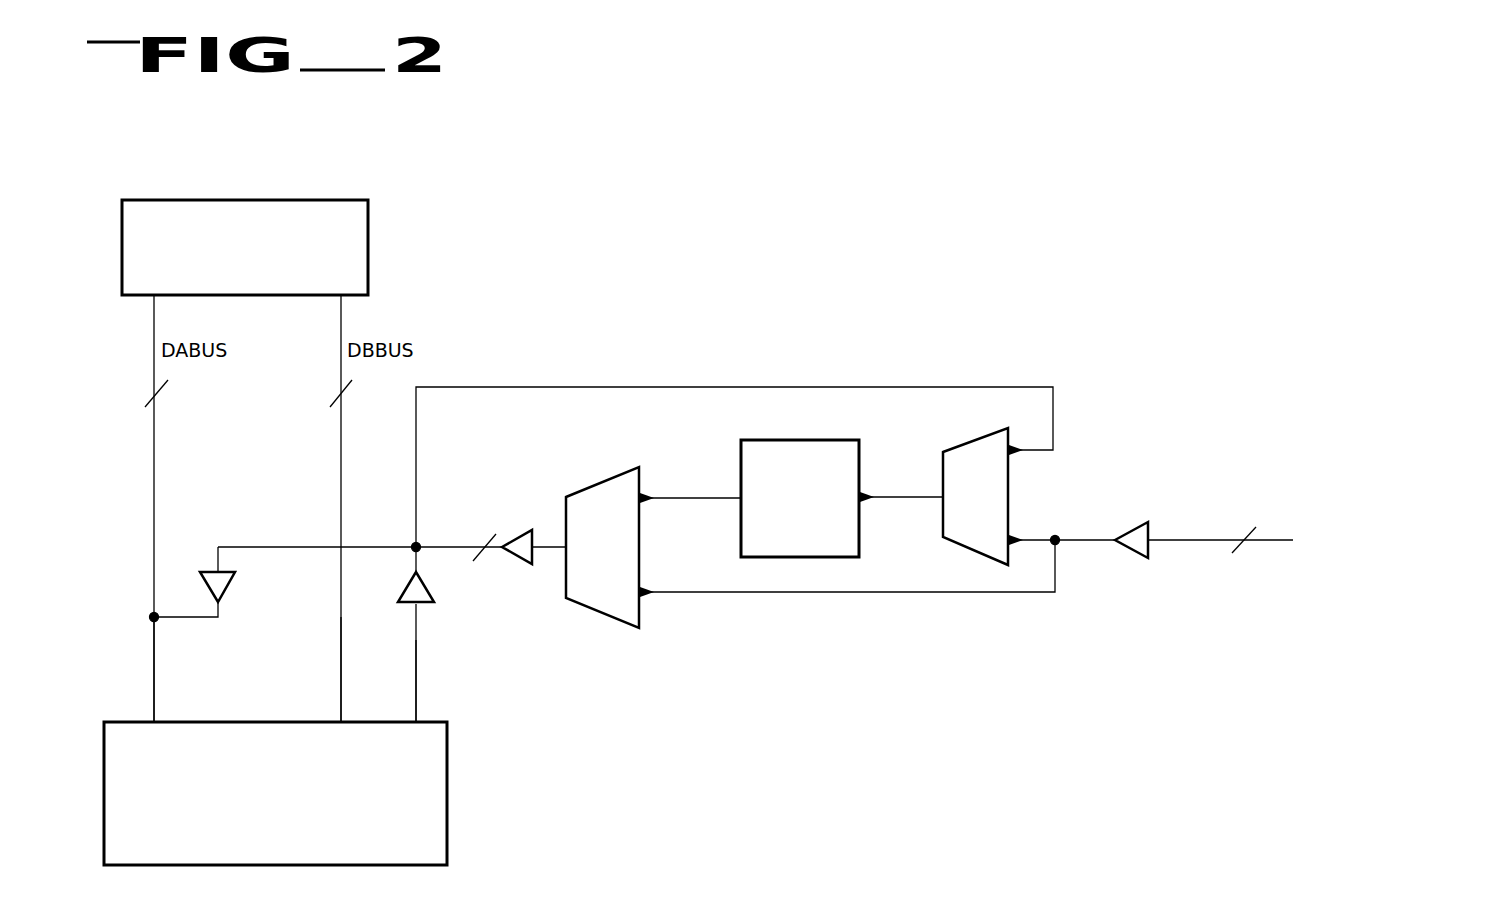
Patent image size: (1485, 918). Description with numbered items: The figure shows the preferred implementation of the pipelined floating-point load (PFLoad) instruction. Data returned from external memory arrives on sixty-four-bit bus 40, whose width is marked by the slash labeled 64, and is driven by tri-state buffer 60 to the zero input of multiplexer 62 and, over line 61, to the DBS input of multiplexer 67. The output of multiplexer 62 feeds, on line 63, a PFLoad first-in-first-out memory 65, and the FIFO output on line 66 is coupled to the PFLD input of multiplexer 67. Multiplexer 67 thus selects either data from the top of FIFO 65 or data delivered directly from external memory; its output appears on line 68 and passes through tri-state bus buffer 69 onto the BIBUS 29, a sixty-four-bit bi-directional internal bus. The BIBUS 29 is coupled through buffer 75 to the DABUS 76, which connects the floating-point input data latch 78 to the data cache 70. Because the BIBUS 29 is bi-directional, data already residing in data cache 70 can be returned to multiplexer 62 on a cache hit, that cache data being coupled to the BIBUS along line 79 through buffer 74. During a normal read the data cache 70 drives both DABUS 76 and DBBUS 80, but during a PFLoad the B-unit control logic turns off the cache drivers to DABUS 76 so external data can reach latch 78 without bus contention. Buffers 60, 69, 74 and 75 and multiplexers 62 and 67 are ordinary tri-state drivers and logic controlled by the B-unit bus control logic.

The floating-point input data latch 78 is at (339, 200).
The 64-bit bus width 64 is at (700, 482).
The BIBUS 29 is at (450, 549).
The tri-state buffer 75 is at (226, 590).
The tri-state buffer 74 is at (420, 606).
The DABUS 76 is at (154, 672).
The DBBUS 80 is at (341, 682).
The line 79 is at (418, 698).
The data cache 70 is at (282, 852).
The tri-state bus buffer 69 is at (523, 530).
The line 68 is at (546, 550).
The multiplexer 67 is at (605, 614).
The line 66 is at (694, 497).
The PFLoad first-in-first-out (FIFO) memory 65 is at (845, 440).
The line 63 is at (903, 497).
The multiplexer 62 is at (985, 556).
The 64-bit bus 40 is at (1205, 540).
The tri-state buffer 60 is at (1133, 522).
The line 61 is at (853, 593).